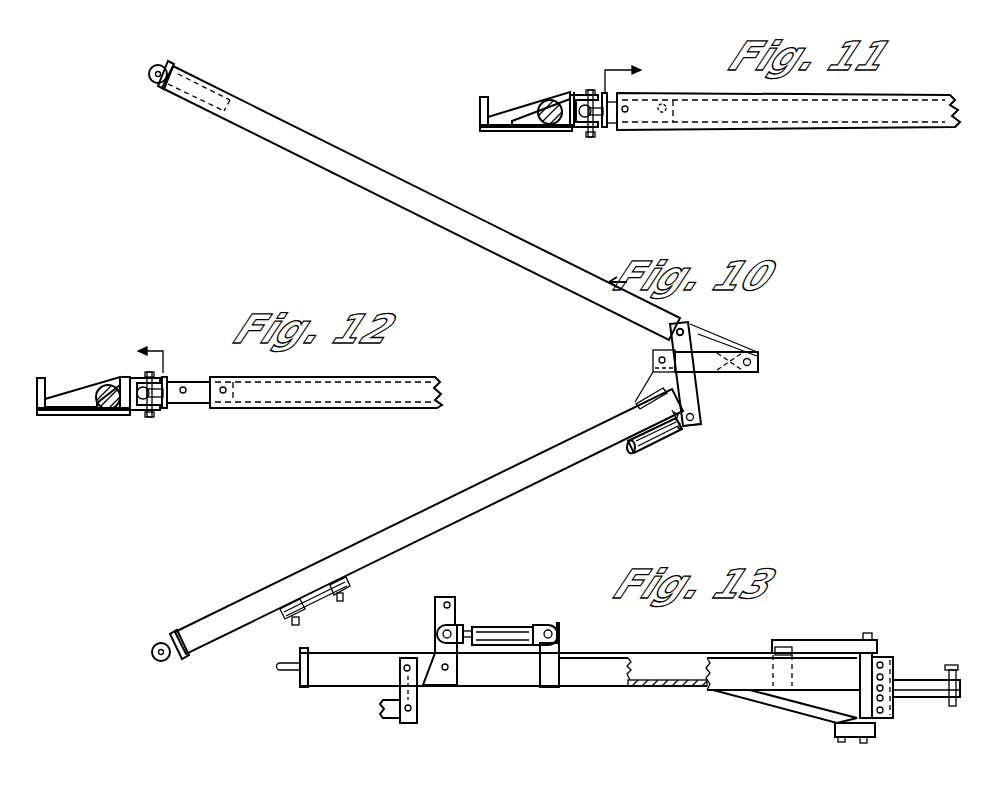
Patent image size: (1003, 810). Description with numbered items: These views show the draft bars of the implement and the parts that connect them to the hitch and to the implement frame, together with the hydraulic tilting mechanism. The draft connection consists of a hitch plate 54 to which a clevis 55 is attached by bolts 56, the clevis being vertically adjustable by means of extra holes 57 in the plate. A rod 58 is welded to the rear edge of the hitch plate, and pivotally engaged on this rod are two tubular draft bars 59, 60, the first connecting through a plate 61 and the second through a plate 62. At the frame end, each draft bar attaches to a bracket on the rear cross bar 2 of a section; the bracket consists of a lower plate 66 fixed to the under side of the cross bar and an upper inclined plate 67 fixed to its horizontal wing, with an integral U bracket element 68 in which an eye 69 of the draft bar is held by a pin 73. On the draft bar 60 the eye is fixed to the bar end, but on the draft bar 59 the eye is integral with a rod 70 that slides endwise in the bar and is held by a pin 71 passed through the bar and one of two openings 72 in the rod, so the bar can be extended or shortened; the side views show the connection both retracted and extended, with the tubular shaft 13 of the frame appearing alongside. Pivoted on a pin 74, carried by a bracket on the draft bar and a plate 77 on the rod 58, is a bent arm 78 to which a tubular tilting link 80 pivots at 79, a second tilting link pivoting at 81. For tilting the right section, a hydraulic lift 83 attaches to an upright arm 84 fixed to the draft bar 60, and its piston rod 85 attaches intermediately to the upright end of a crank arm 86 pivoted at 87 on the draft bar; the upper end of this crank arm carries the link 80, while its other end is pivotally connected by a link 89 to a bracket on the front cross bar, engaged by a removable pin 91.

In FIG. 11, the rear cross bar 2 is at (485, 97).
In FIG. 12, the rear cross bar 2 is at (38, 378).
In FIG. 11, the tubular shaft 13 is at (550, 124).
In FIG. 12, the tubular shaft 13 is at (112, 409).
In FIG. 13, the hitch plate 54 is at (890, 660).
In FIG. 13, the clevis 55 is at (958, 675).
In FIG. 13, the bolts 56 is at (895, 682).
In FIG. 13, the holes 57 is at (879, 664).
In FIG. 13, the rod 58 is at (862, 634).
In FIG. 10, the draft bar 59 is at (407, 184).
In FIG. 11, the draft bar 59 is at (690, 131).
In FIG. 12, the draft bar 59 is at (307, 377).
In FIG. 10, the draft bar 60 is at (590, 428).
In FIG. 13, the draft bar 60 is at (741, 653).
In FIG. 10, the plate 61 is at (697, 330).
In FIG. 10, the plate 62 is at (721, 373).
In FIG. 11, the lower plate 66 is at (522, 131).
In FIG. 12, the lower plate 66 is at (85, 416).
In FIG. 11, the upper inclined plate 67 is at (522, 106).
In FIG. 12, the upper inclined plate 67 is at (63, 392).
In FIG. 11, the U bracket element 68 is at (580, 95).
In FIG. 12, the U bracket element 68 is at (133, 378).
In FIG. 10, the eye 69 is at (156, 84).
In FIG. 12, the eye 69 is at (164, 380).
In FIG. 11, the rod 70 is at (611, 93).
In FIG. 12, the rod 70 is at (200, 382).
In FIG. 12, the pin 71 is at (226, 388).
In FIG. 12, the openings 72 is at (186, 394).
In FIG. 11, the pin 73 is at (592, 137).
In FIG. 12, the pin 73 is at (148, 419).
In FIG. 10, the pin 74 is at (653, 360).
In FIG. 13, the plate 77 is at (797, 650).
In FIG. 10, the bent arm 78 is at (700, 412).
In FIG. 10, the pivot 79 is at (700, 424).
In FIG. 10, the tubular tilting link 80 is at (652, 443).
In FIG. 10, the pivot 81 is at (668, 333).
In FIG. 13, the hydraulic lift 83 is at (545, 618).
In FIG. 13, the upright arm 84 is at (560, 652).
In FIG. 13, the piston rod 85 is at (472, 627).
In FIG. 13, the crank arm 86 is at (457, 625).
In FIG. 13, the pivot 87 is at (448, 670).
In FIG. 13, the link 89 is at (417, 689).
In FIG. 13, the pin 91 is at (398, 719).